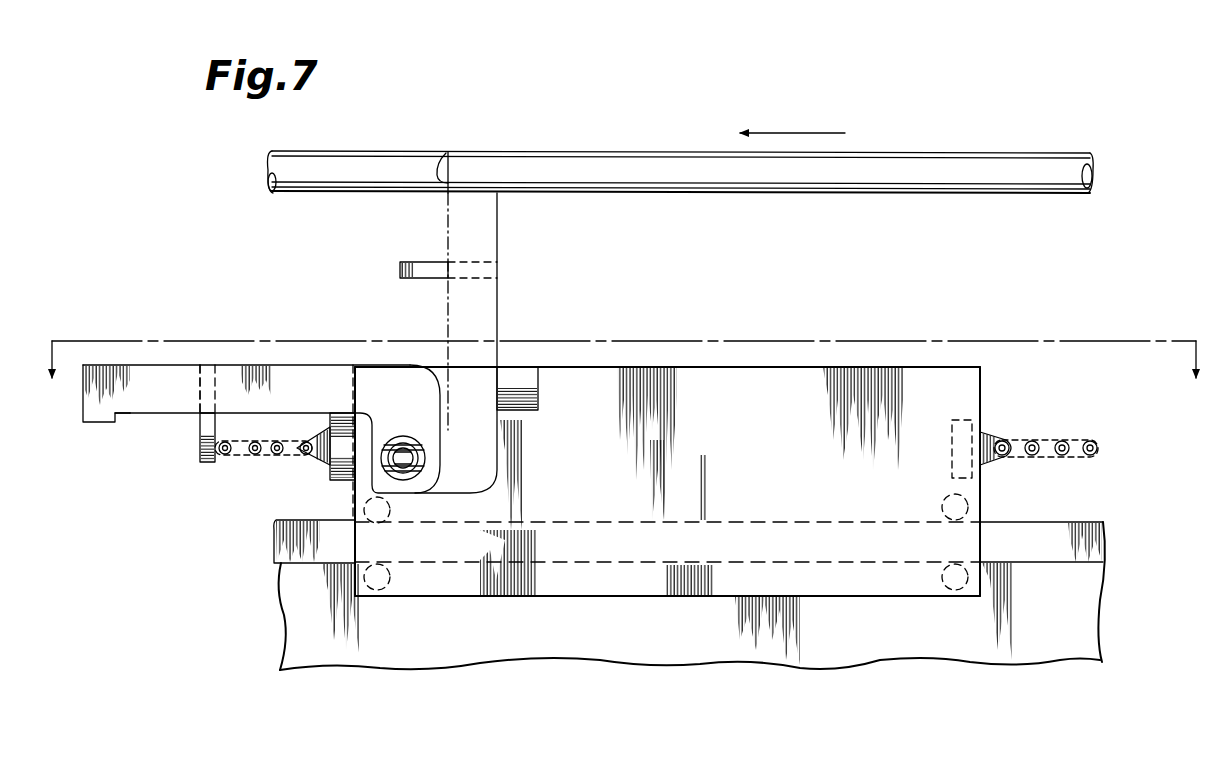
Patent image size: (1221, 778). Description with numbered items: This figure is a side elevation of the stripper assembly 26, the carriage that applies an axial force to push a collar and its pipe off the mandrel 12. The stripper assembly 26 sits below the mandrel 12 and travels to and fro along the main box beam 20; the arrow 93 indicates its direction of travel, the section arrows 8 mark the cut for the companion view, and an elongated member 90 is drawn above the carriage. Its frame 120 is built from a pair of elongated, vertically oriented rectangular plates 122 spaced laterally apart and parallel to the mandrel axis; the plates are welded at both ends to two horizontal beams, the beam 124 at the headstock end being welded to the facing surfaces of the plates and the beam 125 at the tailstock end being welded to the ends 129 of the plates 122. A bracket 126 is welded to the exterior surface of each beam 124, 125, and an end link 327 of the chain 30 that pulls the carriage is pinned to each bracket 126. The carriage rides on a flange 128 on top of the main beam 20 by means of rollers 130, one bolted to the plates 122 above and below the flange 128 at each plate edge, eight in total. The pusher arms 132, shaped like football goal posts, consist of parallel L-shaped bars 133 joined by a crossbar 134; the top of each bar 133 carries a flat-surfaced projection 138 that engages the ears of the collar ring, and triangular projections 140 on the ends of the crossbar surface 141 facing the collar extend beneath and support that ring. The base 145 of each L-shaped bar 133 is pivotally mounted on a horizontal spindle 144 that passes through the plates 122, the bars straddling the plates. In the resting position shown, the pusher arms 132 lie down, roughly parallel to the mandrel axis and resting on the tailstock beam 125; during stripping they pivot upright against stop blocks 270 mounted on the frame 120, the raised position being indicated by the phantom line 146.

The section line 8- 8 is at (620, 376).
The mandrel 12 is at (268, 181).
The main box beam 20 is at (499, 645).
The stripper assembly 26 is at (163, 332).
The chain 30 is at (256, 456).
The guide rail 90 is at (585, 152).
The direction of movement 93 is at (840, 133).
The frame 120 is at (987, 389).
The rectangular plates 122 is at (820, 375).
The horizontal beam 124 is at (966, 426).
The horizontal beam 125 is at (340, 482).
The brackets 126 is at (318, 465).
The flange 128 is at (278, 545).
The ends of the rectangular plates 129 is at (330, 428).
The rollers 130 is at (392, 508).
The pusher arms 132 is at (126, 427).
The L-shaped bars 133 is at (140, 408).
The crossbar 134 is at (215, 365).
The flat surfaced projection 138 is at (444, 153).
The triangular projections 140 is at (210, 465).
The surface of the crossbar 141 is at (410, 278).
The spindle 144 is at (403, 458).
The base of the L-shape 145 is at (383, 398).
The phantom line 146 is at (497, 248).
The stop blocks 270 is at (538, 390).
The end links 327 is at (290, 460).